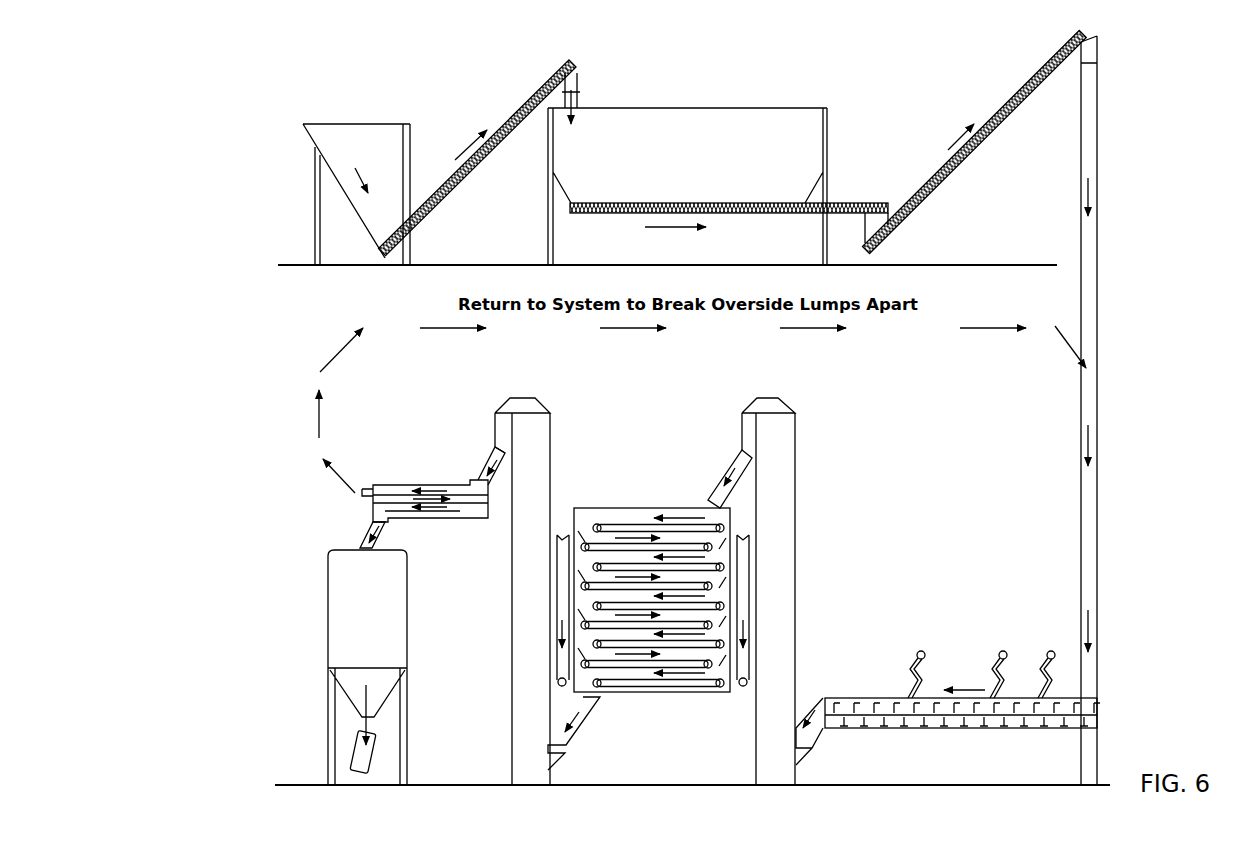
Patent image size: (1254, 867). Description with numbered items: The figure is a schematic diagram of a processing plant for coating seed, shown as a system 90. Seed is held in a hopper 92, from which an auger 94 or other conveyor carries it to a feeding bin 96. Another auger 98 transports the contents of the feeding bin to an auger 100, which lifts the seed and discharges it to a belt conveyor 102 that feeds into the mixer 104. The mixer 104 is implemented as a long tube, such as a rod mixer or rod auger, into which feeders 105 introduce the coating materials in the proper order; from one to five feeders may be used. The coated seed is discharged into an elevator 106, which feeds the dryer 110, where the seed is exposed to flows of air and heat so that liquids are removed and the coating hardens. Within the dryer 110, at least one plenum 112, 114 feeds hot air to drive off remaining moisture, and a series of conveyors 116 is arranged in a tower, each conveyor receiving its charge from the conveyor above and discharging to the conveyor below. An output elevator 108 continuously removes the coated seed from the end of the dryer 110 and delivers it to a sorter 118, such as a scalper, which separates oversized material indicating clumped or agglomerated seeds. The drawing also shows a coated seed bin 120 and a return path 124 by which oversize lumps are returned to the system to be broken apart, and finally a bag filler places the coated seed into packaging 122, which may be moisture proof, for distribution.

The system 90 is at (217, 108).
The hopper 92 is at (390, 134).
The auger 94 is at (520, 108).
The feeding bin 96 is at (605, 118).
The auger 98 is at (852, 203).
The auger 100 is at (1013, 97).
The belt conveyor 102 is at (1099, 148).
The mixer 104 is at (851, 703).
The feeders 105 is at (926, 690).
The elevator 106 is at (796, 446).
The output elevator 108 is at (550, 420).
The dryer 110 is at (613, 520).
The plenum 112 is at (562, 540).
The plenum 114 is at (750, 548).
The conveyors 116 is at (697, 526).
The sorter 118 is at (462, 512).
The coated seed bin 120 is at (367, 667).
The packaging 122 is at (372, 756).
The return conveyor 124 is at (322, 407).